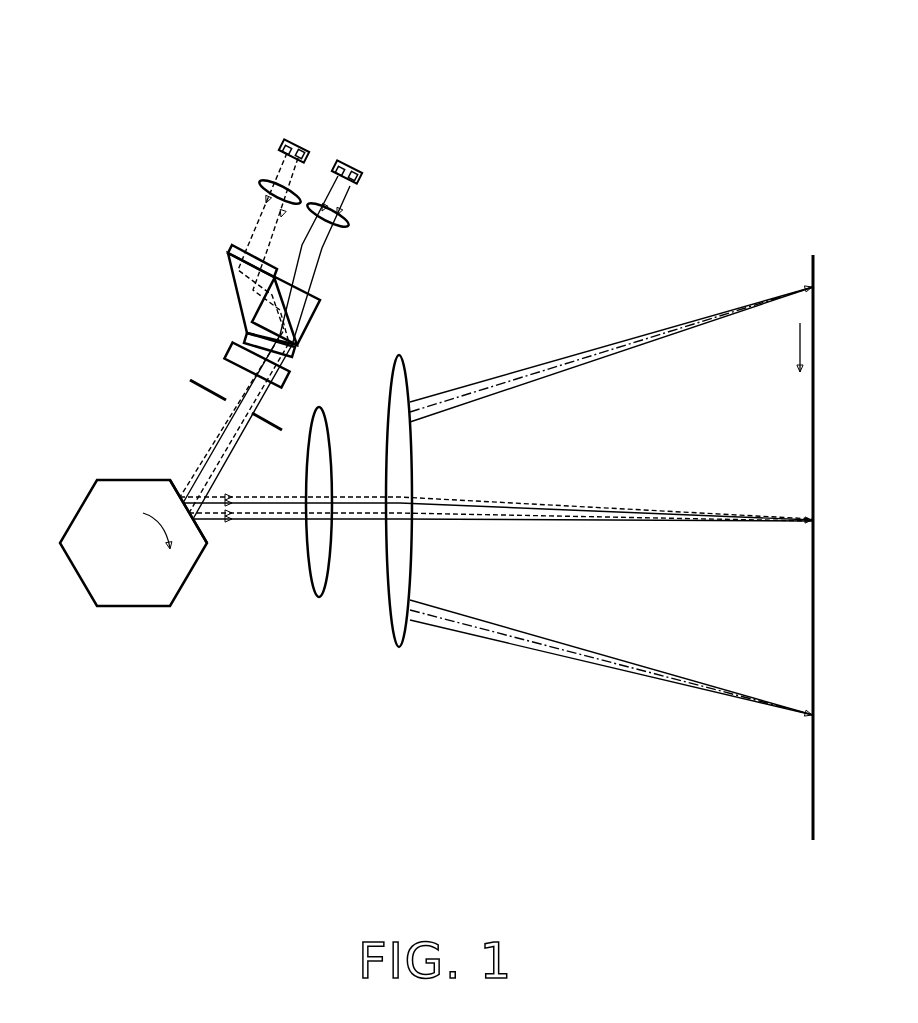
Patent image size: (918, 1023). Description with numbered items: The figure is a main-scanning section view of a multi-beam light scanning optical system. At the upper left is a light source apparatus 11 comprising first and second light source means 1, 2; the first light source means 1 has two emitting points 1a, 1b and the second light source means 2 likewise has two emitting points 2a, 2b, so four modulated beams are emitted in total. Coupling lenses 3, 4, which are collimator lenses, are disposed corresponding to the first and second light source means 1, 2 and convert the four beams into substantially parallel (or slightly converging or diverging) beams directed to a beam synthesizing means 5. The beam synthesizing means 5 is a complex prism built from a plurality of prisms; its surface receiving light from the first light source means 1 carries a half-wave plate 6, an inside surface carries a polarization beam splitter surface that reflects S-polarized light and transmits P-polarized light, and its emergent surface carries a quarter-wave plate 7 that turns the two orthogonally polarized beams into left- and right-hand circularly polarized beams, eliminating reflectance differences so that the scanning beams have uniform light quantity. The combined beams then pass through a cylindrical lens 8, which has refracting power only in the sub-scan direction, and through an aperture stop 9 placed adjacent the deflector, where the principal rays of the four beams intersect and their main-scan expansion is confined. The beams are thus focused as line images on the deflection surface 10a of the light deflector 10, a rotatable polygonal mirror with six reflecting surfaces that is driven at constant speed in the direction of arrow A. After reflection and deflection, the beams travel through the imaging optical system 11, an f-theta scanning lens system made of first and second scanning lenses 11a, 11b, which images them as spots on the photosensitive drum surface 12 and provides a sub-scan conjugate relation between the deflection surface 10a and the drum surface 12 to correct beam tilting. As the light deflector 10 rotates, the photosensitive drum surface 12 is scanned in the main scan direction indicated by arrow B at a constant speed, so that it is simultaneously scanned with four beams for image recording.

The first light source means 1 is at (285, 106).
The emitting point 1a is at (292, 141).
The emitting point 1b is at (306, 141).
The second light source means 2 is at (379, 147).
The emitting point 2a is at (348, 164).
The emitting point 2b is at (358, 168).
The coupling lens 3 is at (266, 188).
The coupling lens 4 is at (338, 226).
The beam synthesizing means 5 is at (231, 266).
The half-wave plate 6 is at (231, 252).
The quarter-wave plate 7 is at (298, 349).
The cylindrical lens 8 is at (228, 356).
The aperture stop 9 is at (190, 380).
The light deflector 10 is at (148, 526).
The deflection surface 10a is at (207, 545).
The light source apparatus / imaging optical system 11 is at (355, 368).
The first scanning lens 11a is at (313, 582).
The second scanning lens 11b is at (392, 588).
The photosensitive drum surface 12 is at (783, 523).
The arrow A is at (157, 551).
The arrow B is at (798, 366).